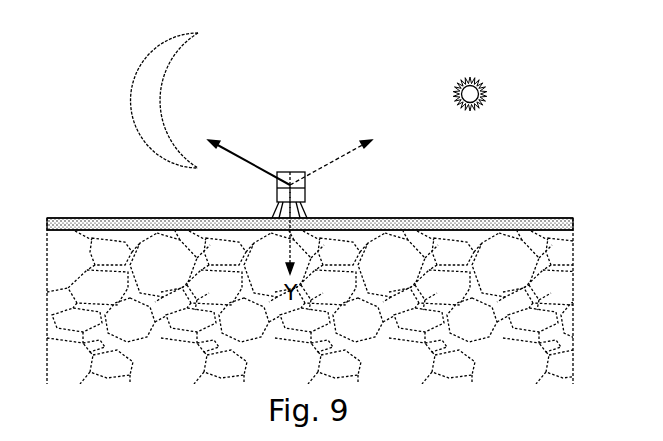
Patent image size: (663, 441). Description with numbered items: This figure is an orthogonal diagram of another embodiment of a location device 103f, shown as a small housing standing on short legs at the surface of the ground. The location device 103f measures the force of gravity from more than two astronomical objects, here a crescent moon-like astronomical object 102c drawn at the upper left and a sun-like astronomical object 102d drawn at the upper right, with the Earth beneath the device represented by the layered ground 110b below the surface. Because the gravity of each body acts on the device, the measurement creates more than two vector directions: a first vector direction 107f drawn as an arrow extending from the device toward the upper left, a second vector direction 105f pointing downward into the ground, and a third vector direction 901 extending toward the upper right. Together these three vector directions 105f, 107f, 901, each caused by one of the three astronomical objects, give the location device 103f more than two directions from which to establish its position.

The astronomical object 102c is at (125, 80).
The astronomical object 102d is at (485, 69).
The vector direction 107f is at (237, 163).
The vector direction 901 is at (327, 166).
The location device 103f is at (305, 194).
The vector direction 105f is at (300, 257).
The subsurface soil / rock bed 110b is at (312, 351).